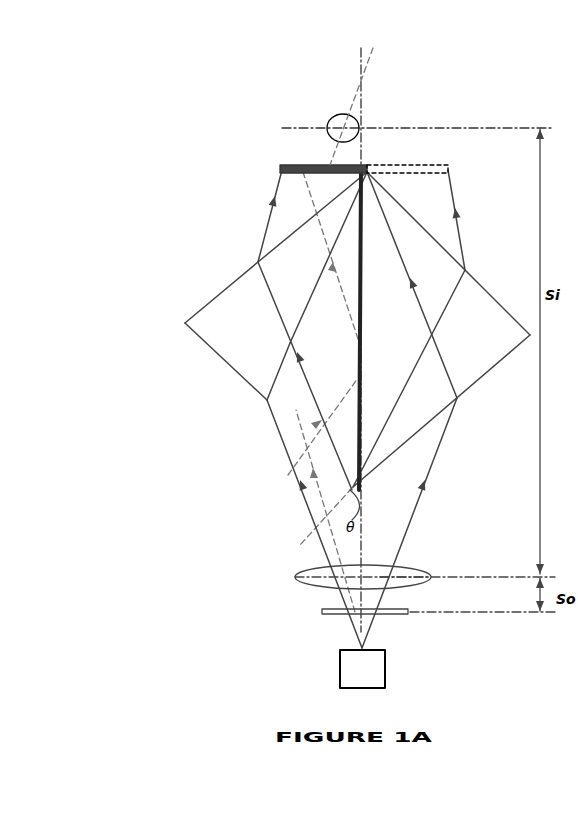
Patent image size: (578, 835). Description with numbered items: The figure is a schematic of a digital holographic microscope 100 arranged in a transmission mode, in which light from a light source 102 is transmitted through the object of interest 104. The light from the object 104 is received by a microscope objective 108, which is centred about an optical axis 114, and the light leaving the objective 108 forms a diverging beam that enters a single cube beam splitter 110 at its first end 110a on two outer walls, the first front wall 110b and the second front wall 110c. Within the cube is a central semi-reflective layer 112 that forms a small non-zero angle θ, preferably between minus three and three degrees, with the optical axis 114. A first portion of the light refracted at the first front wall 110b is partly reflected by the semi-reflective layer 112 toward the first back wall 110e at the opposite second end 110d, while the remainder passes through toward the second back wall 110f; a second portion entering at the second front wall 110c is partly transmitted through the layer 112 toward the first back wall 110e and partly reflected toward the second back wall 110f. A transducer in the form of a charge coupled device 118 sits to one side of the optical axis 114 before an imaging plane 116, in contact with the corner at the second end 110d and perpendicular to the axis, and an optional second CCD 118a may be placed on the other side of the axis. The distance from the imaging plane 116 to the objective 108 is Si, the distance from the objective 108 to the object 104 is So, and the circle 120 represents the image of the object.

The digital holographic microscope 100 is at (153, 111).
The light source 102 is at (340, 660).
The object of interest 104 is at (322, 609).
The microscope objective 108 is at (295, 575).
The beam splitter 110 is at (185, 323).
The first end 110a is at (218, 470).
The first front wall 110b is at (230, 369).
The second front wall 110c is at (477, 387).
The second end 110d is at (218, 197).
The first back wall 110e is at (256, 266).
The second back wall 110f is at (480, 283).
The semi-reflective layer 112 is at (348, 396).
The optical axis 114 is at (360, 54).
The imaging plane 116 is at (282, 128).
The charge coupled device 118 is at (280, 170).
The second CCD 118a is at (448, 170).
The circle 120 is at (322, 118).